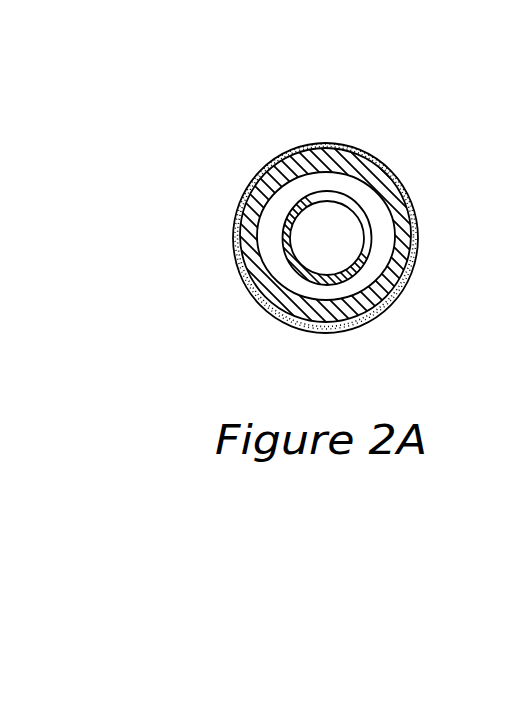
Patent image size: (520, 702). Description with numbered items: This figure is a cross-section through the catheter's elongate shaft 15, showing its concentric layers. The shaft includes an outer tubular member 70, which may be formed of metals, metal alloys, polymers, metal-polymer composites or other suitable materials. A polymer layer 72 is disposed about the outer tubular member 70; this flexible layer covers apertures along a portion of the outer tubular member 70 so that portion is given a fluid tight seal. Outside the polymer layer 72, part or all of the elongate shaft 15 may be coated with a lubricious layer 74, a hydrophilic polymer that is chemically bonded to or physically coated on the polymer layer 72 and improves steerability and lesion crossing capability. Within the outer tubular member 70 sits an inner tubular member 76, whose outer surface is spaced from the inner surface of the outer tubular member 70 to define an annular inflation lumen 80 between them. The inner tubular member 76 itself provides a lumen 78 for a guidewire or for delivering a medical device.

The elongate shaft 15 is at (247, 125).
The outer tubular member 70 is at (413, 190).
The polymer layer 72 is at (400, 272).
The lubricious layer 74 is at (380, 308).
The inner tubular member 76 is at (296, 263).
The lumen 78 is at (328, 228).
The annular inflation lumen 80 is at (277, 230).